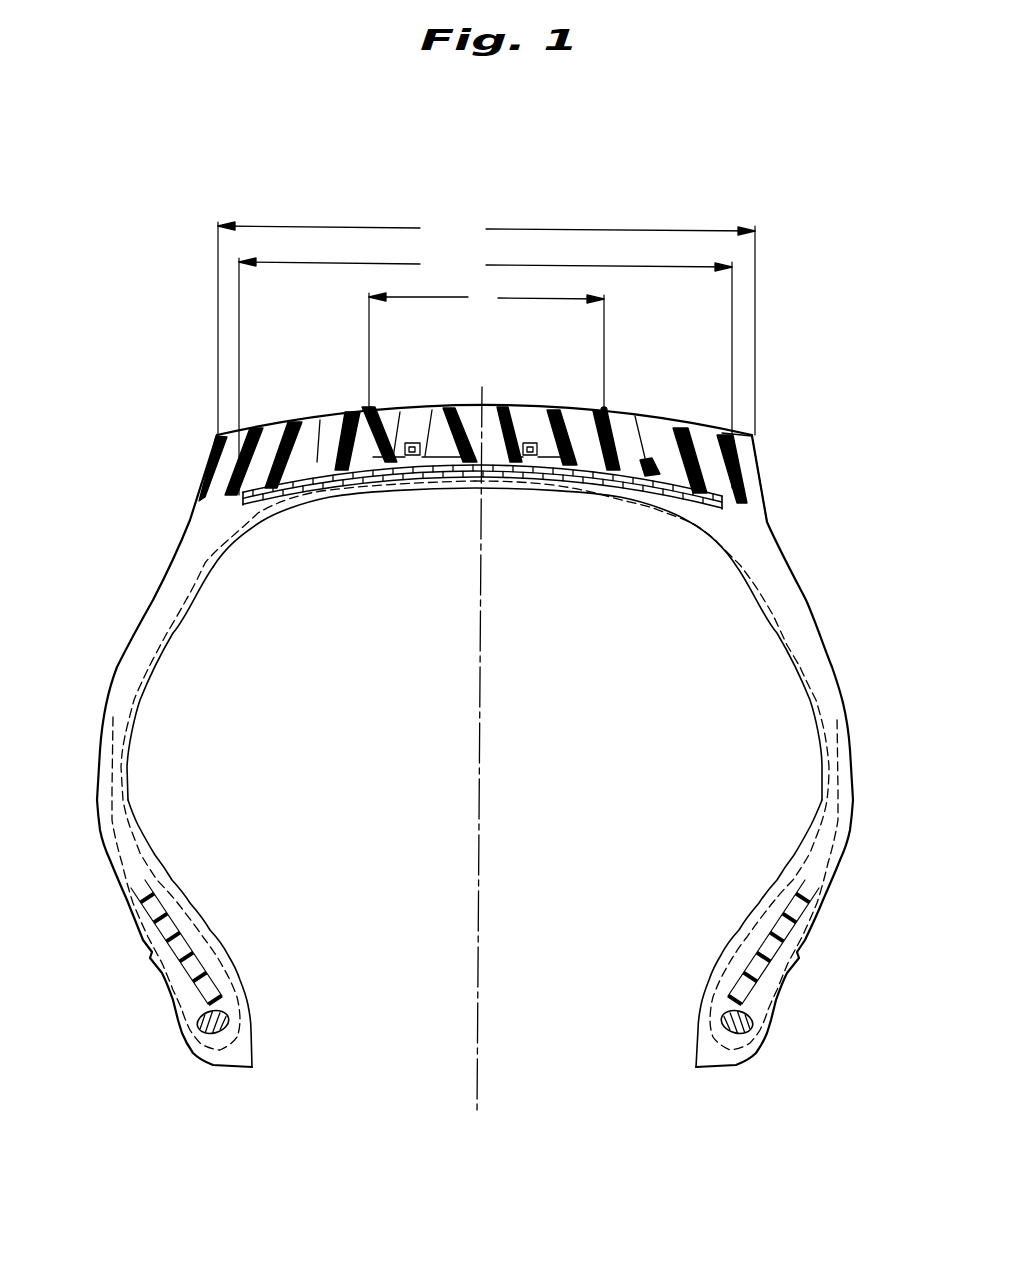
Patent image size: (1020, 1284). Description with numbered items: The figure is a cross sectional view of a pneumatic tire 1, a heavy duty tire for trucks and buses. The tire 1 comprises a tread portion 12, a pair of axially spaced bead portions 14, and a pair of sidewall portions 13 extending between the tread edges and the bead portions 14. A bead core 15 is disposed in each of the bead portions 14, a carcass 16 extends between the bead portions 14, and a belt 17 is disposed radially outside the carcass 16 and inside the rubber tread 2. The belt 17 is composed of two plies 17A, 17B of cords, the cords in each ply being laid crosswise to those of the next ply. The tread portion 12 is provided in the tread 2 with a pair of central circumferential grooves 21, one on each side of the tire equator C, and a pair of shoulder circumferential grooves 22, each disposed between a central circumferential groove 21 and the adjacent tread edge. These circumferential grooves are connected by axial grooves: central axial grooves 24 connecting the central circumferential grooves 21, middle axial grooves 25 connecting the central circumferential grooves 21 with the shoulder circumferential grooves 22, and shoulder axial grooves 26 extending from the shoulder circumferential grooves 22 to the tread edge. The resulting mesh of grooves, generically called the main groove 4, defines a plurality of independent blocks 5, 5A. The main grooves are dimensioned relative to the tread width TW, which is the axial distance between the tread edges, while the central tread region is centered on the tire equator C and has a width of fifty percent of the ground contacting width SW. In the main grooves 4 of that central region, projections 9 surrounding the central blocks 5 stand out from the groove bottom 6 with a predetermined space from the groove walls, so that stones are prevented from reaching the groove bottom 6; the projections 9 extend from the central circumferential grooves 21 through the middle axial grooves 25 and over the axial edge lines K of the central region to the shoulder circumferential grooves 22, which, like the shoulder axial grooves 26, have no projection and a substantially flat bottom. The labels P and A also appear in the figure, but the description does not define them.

The pneumatic tire 1 is at (190, 322).
The tread 2 is at (268, 420).
The main groove 4 is at (547, 355).
The blocks 5 is at (282, 460).
The blocks 5A is at (447, 437).
The groove bottom 6 is at (380, 460).
The projections 9 is at (420, 456).
The tread portion 12 is at (705, 417).
The sidewall portions 13 is at (140, 582).
The bead portions 14 is at (160, 985).
The bead core 15 is at (213, 1030).
The carcass 16 is at (797, 640).
The belt 17 is at (530, 592).
The belt ply 17A is at (643, 484).
The belt ply 17B is at (556, 477).
The central circumferential grooves 21 is at (422, 417).
The shoulder circumferential grooves 22 is at (325, 421).
The central axial grooves 24 is at (478, 415).
The middle axial grooves 25 is at (357, 408).
The shoulder axial grooves 26 is at (243, 477).
The point on tread surface P is at (372, 408).
The axial edge lines K is at (754, 430).
The tire equator C is at (476, 1078).
The tread width TW is at (486, 321).
The ground contacting width SW is at (485, 371).
The axial distance A is at (486, 345).